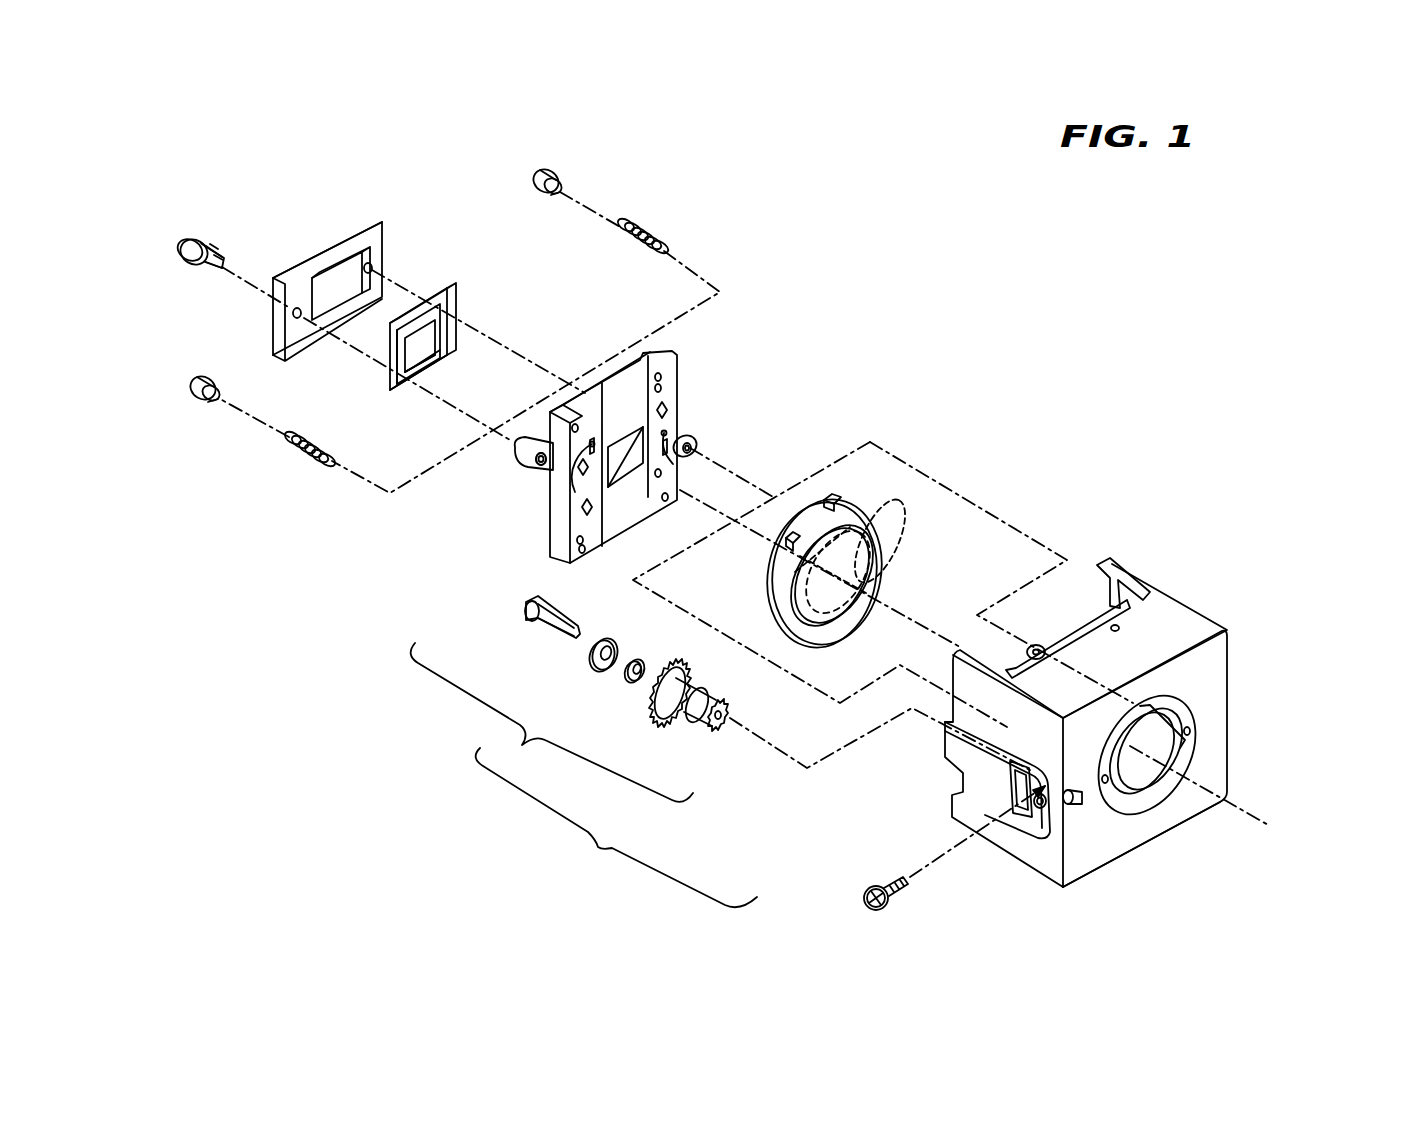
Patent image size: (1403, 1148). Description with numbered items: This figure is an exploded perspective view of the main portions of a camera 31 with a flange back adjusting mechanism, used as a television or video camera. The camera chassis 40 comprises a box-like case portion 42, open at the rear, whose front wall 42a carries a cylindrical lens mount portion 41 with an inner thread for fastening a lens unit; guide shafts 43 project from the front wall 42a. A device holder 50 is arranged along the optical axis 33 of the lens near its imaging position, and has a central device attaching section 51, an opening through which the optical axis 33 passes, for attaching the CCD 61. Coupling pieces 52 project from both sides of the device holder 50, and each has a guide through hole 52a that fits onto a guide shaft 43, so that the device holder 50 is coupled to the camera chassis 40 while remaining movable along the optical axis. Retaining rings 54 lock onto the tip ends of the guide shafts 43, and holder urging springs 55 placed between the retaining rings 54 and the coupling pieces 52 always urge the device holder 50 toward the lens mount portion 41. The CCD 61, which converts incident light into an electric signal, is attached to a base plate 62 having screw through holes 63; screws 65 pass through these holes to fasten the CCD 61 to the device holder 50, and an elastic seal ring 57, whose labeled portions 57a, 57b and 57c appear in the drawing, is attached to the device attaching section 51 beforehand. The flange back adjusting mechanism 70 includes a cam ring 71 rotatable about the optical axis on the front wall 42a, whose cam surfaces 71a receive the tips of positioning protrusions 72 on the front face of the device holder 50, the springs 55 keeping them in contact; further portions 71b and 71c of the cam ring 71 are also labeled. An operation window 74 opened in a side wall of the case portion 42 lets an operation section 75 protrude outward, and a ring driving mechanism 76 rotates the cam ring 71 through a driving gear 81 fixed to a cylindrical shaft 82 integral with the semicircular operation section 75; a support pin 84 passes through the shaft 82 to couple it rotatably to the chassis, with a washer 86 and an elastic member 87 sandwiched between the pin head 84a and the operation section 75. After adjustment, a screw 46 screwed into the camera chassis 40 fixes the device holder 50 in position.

The camera with a flange back adjusting mechanism 31 is at (902, 342).
The optical axis 33 is at (524, 385).
The camera chassis 40 is at (1146, 852).
The lens mount portion 41 is at (1218, 735).
The case portion 42 is at (1020, 868).
The front wall 42a is at (1213, 771).
The guide shaft 43 is at (1030, 737).
The screw 46 is at (866, 902).
The device holder 50 is at (677, 368).
The device attaching section 51 is at (628, 468).
The coupling pieces 52 is at (514, 456).
The guide through hole 52a is at (538, 470).
The retaining rings 54 is at (553, 178).
The holder urging springs 55 is at (636, 230).
The seal ring 57 is at (452, 311).
The frame bottom portion 57a is at (408, 386).
The frame side portion 57b is at (390, 380).
The frame inner ledge 57c is at (432, 354).
The CCD 61 is at (384, 238).
The base plate 62 is at (376, 220).
The screw through holes 63 is at (373, 266).
The screws 65 is at (207, 252).
The flange back adjusting mechanism 70 is at (616, 827).
The cam ring 71 is at (812, 637).
The cam surfaces 71a is at (894, 526).
The tab 71b is at (832, 494).
The tab 71c is at (790, 548).
The positioning protrusions 72 is at (684, 432).
The operation window 74 is at (1017, 792).
The operation section 75 is at (666, 716).
The ring driving mechanism 76 is at (522, 745).
The driving gear 81 is at (730, 730).
The cylindrical shaft 82 is at (712, 723).
The support pin 84 is at (561, 628).
The head 84a is at (527, 613).
The washer 86 is at (597, 662).
The elastic member 87 is at (631, 681).